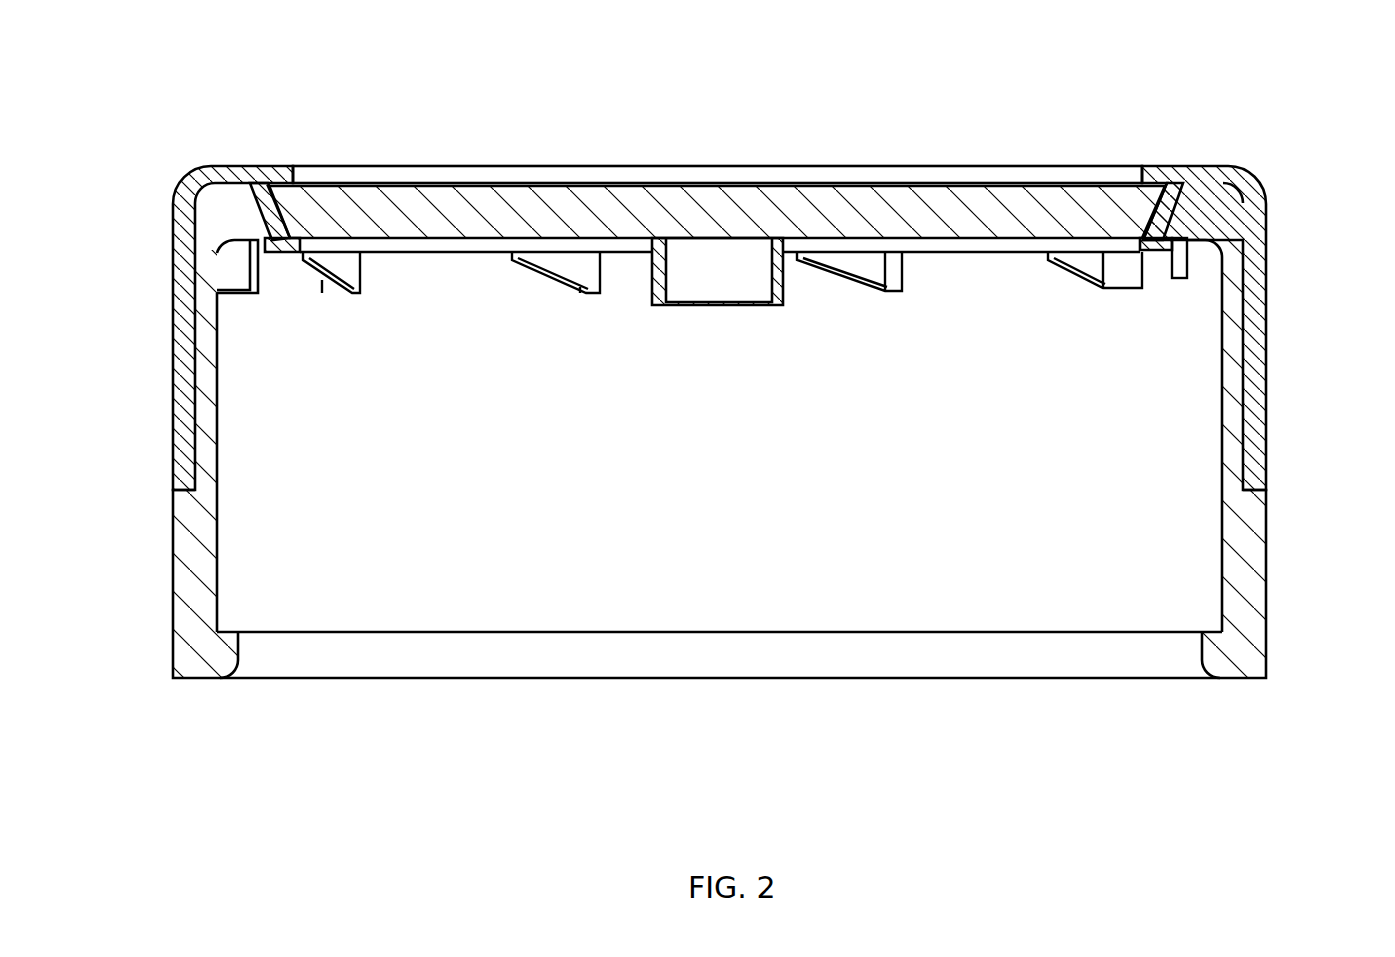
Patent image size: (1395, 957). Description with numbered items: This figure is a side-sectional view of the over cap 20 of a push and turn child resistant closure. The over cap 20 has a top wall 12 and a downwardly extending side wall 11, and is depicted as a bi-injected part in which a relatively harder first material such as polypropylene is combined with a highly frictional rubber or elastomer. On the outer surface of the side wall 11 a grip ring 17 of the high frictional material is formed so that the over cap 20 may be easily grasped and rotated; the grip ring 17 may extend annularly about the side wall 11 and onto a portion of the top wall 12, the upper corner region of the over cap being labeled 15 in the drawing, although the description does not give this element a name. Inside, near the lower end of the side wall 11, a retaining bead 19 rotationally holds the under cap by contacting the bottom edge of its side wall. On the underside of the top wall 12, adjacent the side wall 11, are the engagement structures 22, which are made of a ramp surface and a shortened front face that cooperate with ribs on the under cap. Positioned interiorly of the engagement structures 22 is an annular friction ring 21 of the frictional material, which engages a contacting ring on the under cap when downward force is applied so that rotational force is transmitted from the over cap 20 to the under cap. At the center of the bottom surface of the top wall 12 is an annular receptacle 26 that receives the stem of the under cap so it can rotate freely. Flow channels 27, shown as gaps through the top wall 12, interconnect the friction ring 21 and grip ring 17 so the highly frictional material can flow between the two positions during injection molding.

The over cap 20 is at (1250, 117).
The side wall 11 is at (185, 540).
The top wall 12 is at (352, 227).
The top wall 15 is at (212, 200).
The grip ring 17 is at (1266, 315).
The retaining bead 19 is at (1208, 647).
The friction ring 21 is at (289, 255).
The engagement structures 22 is at (232, 274).
The annular receptacle 26 is at (781, 272).
The flow channel 27 is at (282, 192).